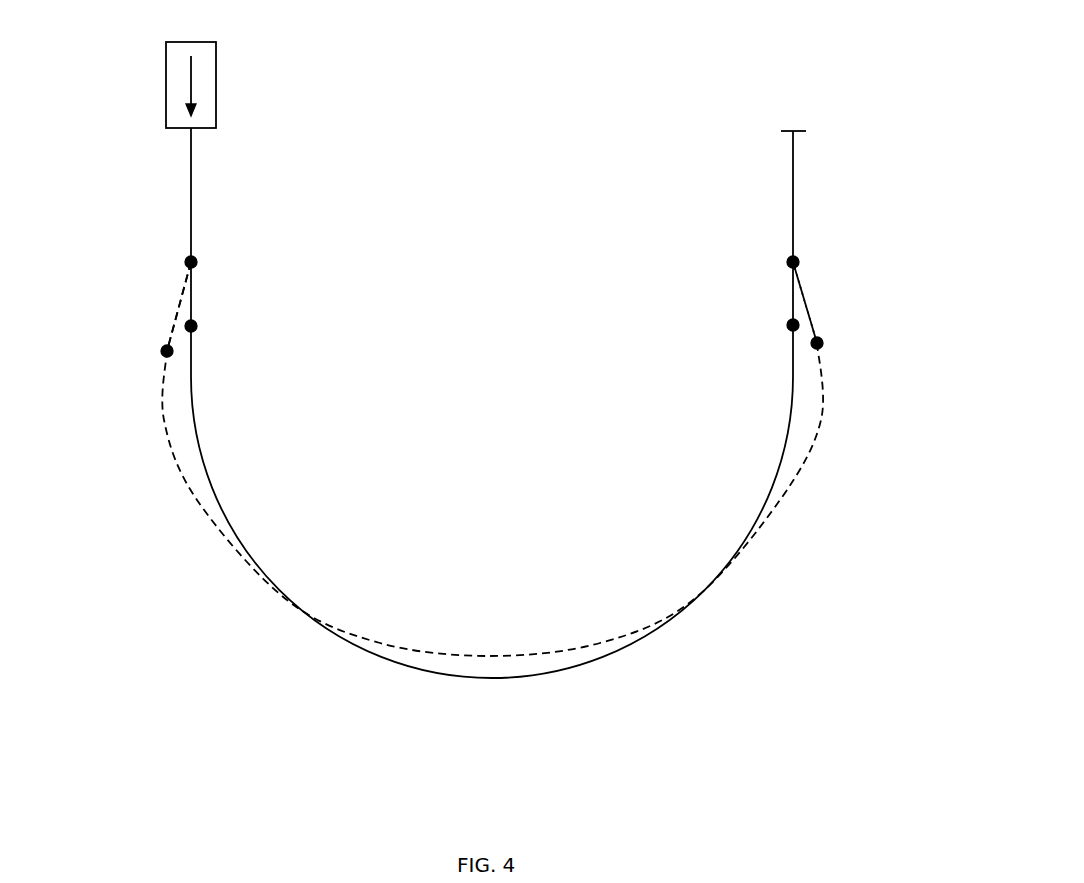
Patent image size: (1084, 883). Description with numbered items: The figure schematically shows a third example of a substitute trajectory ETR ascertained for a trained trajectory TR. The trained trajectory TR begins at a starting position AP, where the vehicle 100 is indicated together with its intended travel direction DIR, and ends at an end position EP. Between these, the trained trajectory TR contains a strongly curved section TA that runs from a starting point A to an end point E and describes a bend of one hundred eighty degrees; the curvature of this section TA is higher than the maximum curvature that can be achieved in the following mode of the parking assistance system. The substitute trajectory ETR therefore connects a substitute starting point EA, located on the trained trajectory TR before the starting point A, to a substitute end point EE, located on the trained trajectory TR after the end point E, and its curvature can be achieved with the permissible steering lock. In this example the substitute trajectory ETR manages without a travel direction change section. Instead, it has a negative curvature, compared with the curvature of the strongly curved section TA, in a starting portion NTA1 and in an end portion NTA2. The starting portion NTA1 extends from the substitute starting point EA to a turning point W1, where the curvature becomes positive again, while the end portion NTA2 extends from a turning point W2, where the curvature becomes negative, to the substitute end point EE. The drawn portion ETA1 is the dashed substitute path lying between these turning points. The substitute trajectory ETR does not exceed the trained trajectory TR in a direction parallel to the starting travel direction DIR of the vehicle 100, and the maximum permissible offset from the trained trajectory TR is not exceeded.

The vehicle 100 is at (165, 50).
The travel direction DIR is at (191, 85).
The starting position AP is at (126, 118).
The trained trajectory TR is at (191, 180).
The substitute starting point EA is at (197, 261).
The starting portion NTA1 is at (177, 326).
The starting point A is at (197, 326).
The turning point W1 is at (162, 351).
The end position EP is at (804, 132).
The substitute end point EE is at (787, 261).
The end point E is at (787, 326).
The end portion NTA2 is at (810, 323).
The turning point W2 is at (823, 343).
The substitute trajectory ETR is at (492, 459).
The estimated trajectory arc ETA1 is at (431, 650).
The strongly curved section TA is at (345, 640).